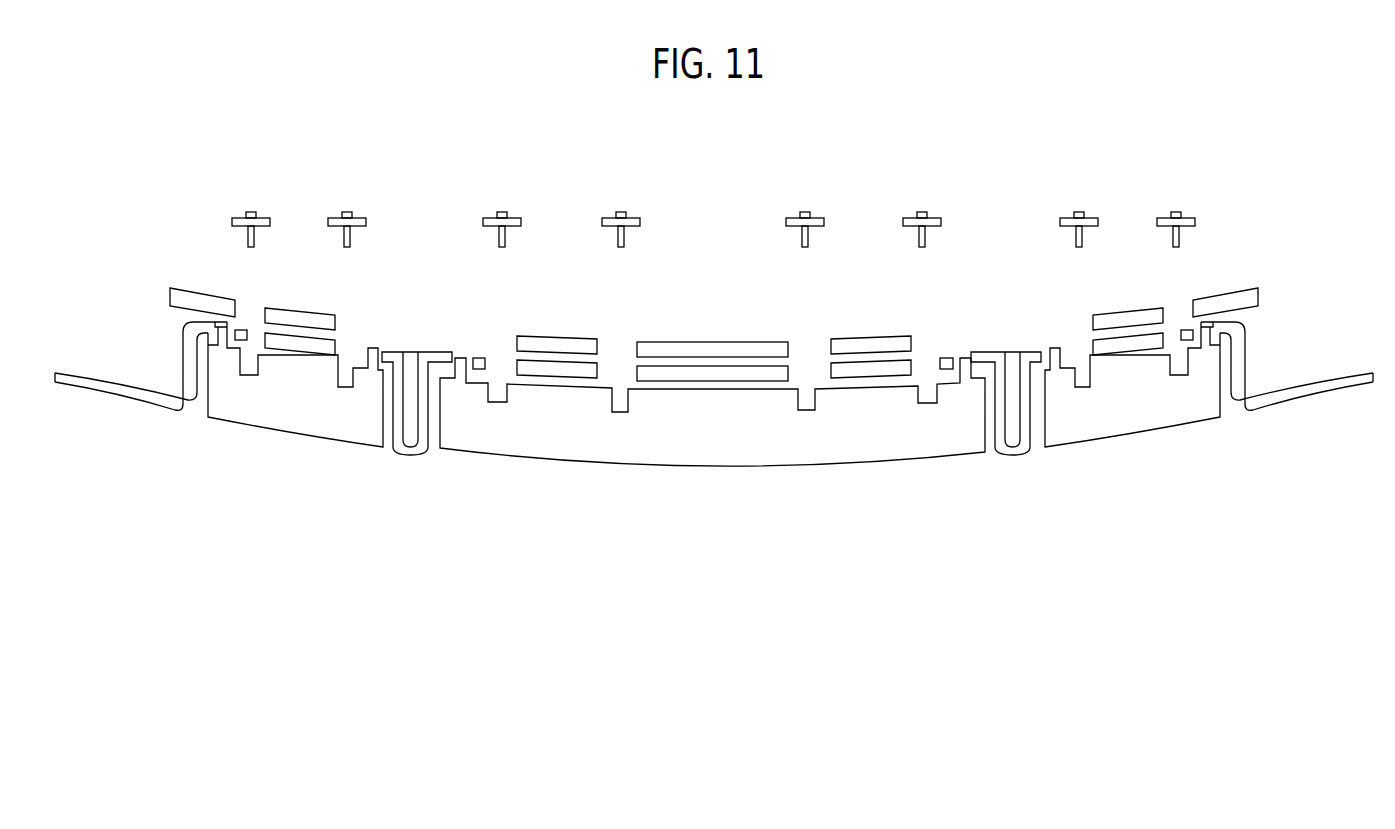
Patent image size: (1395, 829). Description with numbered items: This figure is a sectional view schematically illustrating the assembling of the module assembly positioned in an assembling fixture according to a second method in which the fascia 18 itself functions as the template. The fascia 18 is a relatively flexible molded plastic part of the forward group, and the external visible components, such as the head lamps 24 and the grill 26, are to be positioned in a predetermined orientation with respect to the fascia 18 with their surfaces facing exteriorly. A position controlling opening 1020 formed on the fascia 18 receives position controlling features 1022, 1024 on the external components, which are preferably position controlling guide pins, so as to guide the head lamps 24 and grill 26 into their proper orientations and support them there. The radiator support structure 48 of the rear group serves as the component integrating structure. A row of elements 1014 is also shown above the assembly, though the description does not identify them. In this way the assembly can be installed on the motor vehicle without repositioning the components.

The fascia 18 is at (1273, 403).
The head lamps 24 is at (238, 413).
The grill 26 is at (782, 455).
The radiator support structure 48 is at (848, 345).
The fastener 1014 is at (620, 212).
The position controlling opening 1020 is at (215, 323).
The position controlling feature 1022 is at (247, 335).
The position controlling feature 1024 is at (488, 361).